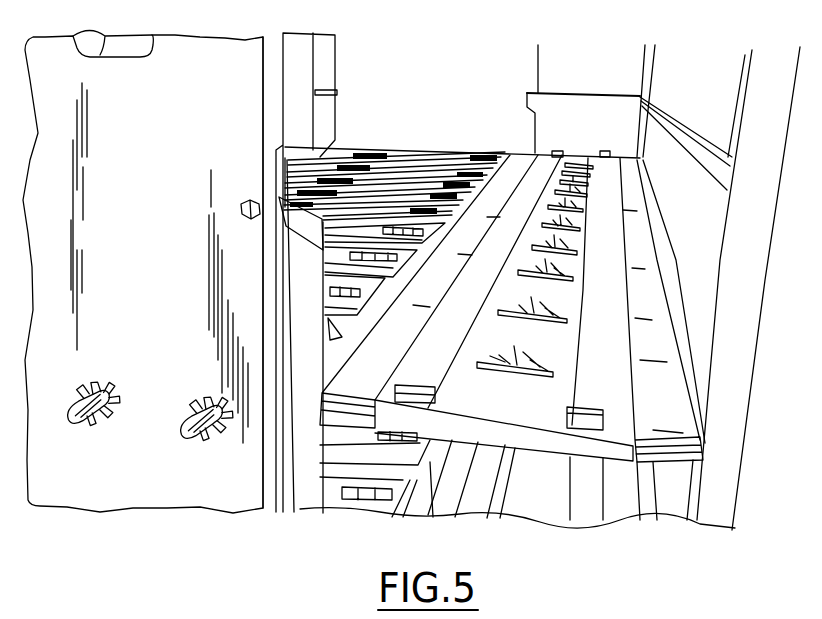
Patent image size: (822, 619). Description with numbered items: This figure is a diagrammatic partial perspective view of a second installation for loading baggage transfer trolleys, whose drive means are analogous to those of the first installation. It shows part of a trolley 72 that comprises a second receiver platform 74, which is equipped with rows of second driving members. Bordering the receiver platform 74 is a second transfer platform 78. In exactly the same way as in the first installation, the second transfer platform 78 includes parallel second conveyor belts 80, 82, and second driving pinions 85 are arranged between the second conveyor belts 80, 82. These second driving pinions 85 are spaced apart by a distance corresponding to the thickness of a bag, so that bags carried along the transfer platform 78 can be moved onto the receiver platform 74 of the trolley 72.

The trolley 72 is at (162, 268).
The second receiver platform 74 is at (428, 187).
The second transfer platform 78 is at (497, 430).
The second conveyor belt 80 is at (412, 349).
The second conveyor belt 82 is at (678, 418).
The second driving pinions 85 is at (523, 297).